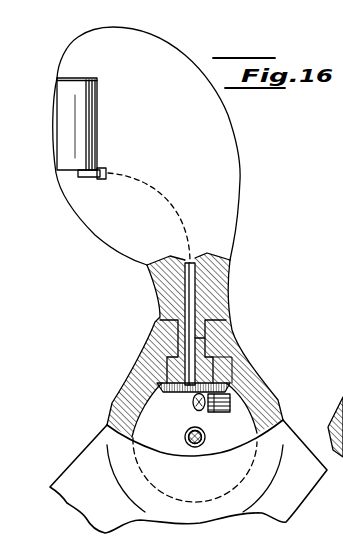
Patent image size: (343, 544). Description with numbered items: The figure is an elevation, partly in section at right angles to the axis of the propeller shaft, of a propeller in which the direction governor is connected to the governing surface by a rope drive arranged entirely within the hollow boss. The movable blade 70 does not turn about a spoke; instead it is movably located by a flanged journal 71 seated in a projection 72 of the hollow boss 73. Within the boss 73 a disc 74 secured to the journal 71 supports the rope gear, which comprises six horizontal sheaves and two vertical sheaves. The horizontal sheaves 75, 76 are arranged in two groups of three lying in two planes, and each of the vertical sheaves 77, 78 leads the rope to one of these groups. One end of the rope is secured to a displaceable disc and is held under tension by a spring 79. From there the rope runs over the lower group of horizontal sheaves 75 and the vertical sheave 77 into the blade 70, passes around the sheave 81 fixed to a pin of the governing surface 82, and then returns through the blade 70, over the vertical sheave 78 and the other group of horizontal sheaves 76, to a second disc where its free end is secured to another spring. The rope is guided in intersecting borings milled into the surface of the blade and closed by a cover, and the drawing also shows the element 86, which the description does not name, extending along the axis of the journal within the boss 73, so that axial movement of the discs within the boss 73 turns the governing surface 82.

The movable blade 70 is at (235, 162).
The flanged journal 71 is at (221, 338).
The projection 72 is at (163, 326).
The hollow boss 73 is at (117, 403).
The disc 74 is at (178, 391).
The horizontal sheaves 75 is at (228, 410).
The horizontal sheaves 76 is at (253, 384).
The vertical sheave 77 is at (197, 405).
The vertical sheave 78 is at (231, 364).
The spring 79 is at (335, 400).
The sheave 81 is at (97, 177).
The governing surface 82 is at (58, 147).
The rod 86 is at (191, 293).